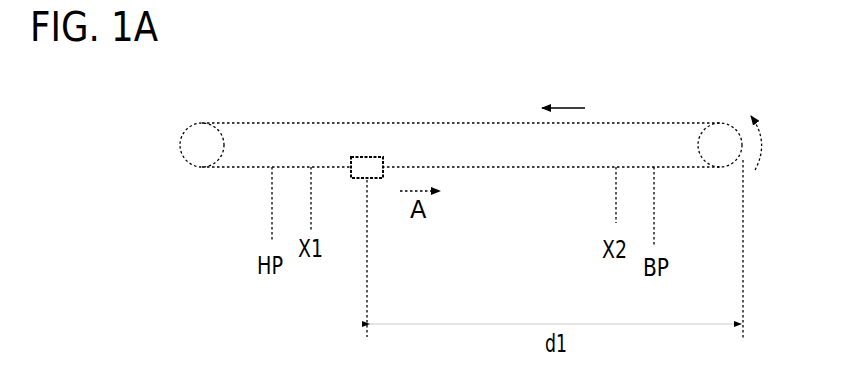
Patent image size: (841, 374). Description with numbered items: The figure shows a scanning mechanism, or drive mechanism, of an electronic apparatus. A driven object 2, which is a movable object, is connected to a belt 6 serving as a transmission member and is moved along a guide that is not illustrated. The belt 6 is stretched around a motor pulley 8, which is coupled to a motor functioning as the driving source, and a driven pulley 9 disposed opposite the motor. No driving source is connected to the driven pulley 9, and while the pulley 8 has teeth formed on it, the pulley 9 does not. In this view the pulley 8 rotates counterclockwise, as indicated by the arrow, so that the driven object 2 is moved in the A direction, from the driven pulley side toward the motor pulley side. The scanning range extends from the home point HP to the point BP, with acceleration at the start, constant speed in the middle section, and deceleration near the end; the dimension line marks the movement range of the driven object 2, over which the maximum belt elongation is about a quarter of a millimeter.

The driven object 2 is at (358, 180).
The belt 6 is at (440, 122).
The motor pulley 8 is at (723, 123).
The driven pulley 9 is at (190, 126).